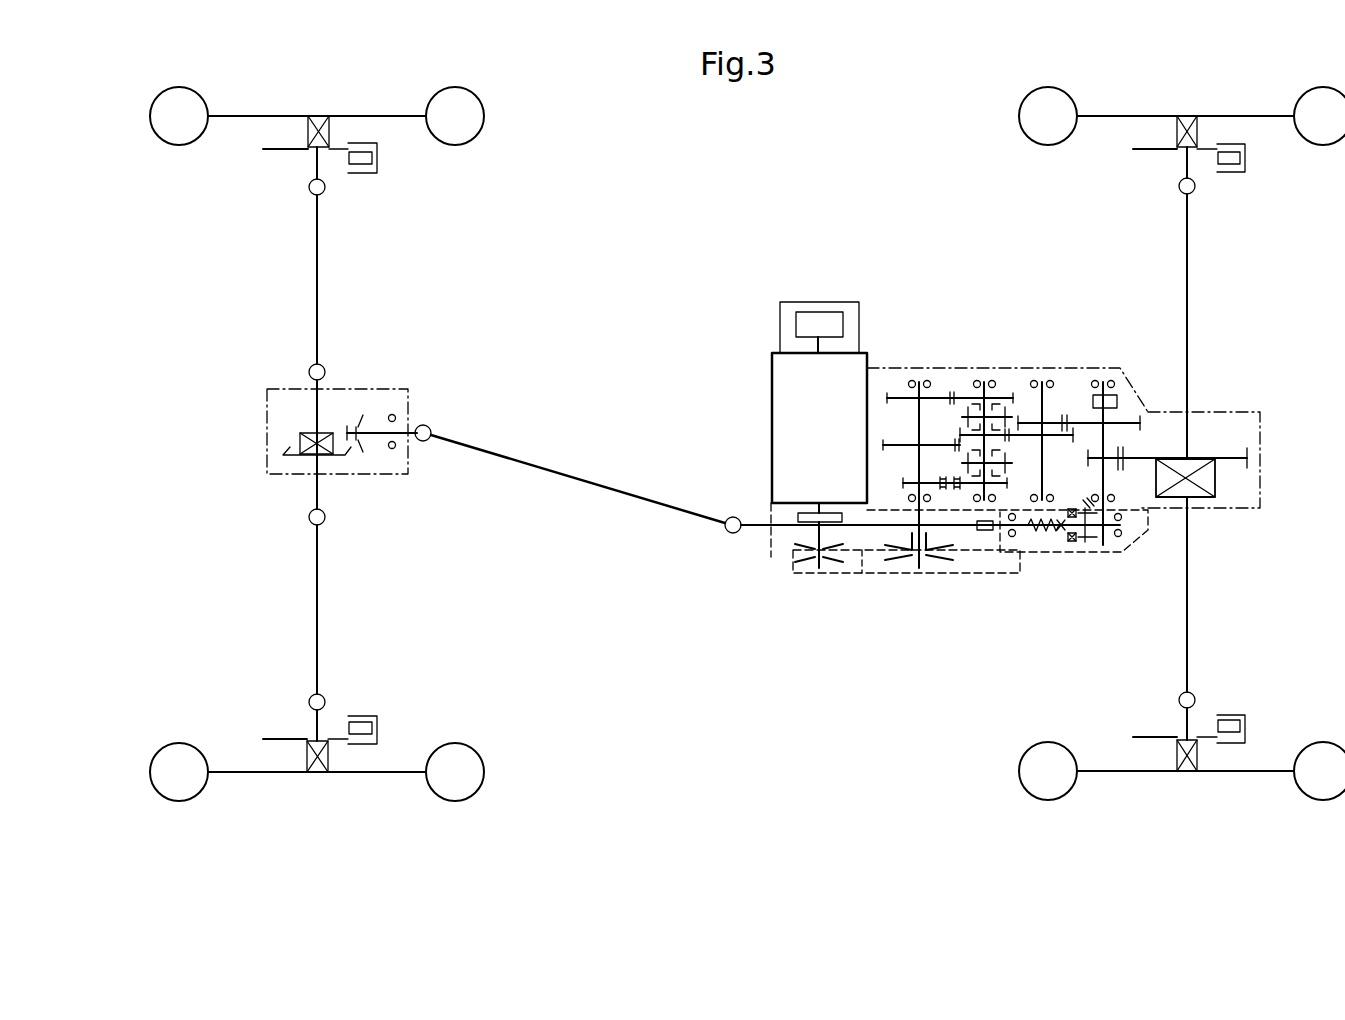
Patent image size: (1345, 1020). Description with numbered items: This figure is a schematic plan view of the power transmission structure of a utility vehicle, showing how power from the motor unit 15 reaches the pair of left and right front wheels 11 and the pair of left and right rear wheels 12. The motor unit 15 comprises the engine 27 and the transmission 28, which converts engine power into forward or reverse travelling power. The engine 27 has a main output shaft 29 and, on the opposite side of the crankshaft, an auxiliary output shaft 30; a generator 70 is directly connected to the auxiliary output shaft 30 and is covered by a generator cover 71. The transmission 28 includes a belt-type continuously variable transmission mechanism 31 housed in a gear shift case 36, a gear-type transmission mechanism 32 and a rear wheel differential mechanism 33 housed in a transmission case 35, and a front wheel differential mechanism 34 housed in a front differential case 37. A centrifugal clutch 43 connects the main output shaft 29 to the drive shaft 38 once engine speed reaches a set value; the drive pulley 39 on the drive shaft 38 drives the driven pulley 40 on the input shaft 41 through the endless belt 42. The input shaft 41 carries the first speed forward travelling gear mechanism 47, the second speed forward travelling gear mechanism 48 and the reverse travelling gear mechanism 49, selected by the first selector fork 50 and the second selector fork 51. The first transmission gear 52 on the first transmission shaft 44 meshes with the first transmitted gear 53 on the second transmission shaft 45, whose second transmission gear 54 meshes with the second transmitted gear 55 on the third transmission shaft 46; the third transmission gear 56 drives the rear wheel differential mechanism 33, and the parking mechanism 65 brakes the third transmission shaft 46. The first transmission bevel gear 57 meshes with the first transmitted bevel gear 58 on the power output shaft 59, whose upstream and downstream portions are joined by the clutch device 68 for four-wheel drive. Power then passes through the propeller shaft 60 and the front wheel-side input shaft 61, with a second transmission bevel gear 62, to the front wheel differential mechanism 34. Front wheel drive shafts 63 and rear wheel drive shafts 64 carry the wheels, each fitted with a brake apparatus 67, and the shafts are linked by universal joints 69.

The front wheels 11 is at (188, 86).
The rear wheels 12 is at (1213, 113).
The motor unit 15 is at (768, 285).
The engine 27 is at (772, 432).
The transmission 28 is at (1022, 322).
The main output shaft 29 is at (817, 512).
The auxiliary output shaft 30 is at (818, 345).
The belt-type continuously variable transmission mechanism 31 is at (800, 563).
The gear-type transmission mechanism 32 is at (1012, 387).
The rear wheel differential mechanism 33 is at (1193, 493).
The front wheel differential mechanism 34 is at (298, 437).
The transmission case 35 is at (1215, 412).
The gear shift case 36 is at (897, 573).
The front differential case 37 is at (392, 389).
The drive shaft 38 is at (818, 530).
The drive pulley 39 is at (833, 560).
The driven pulley 40 is at (942, 558).
The input shaft 41 is at (920, 563).
The endless belt 42 is at (862, 573).
The centrifugal clutch 43 is at (813, 508).
The first transmission shaft 44 is at (987, 387).
The second transmission shaft 45 is at (1047, 397).
The third transmission shaft 46 is at (1107, 415).
The first speed forward travelling gear mechanism 47 is at (880, 398).
The second speed forward travelling gear mechanism 48 is at (878, 445).
The reverse travelling gear mechanism 49 is at (893, 482).
The first selector fork 50 is at (967, 418).
The second selector fork 51 is at (967, 465).
The first transmission gear 52 is at (1007, 437).
The first transmitted gear 53 is at (1050, 437).
The second transmission gear 54 is at (1057, 422).
The second transmitted gear 55 is at (1123, 427).
The third transmission gear 56 is at (1110, 463).
The first transmission bevel gear 57 is at (1118, 505).
The first transmitted bevel gear 58 is at (1087, 540).
The power output shaft 59 is at (955, 528).
The propeller shaft 60 is at (593, 488).
The front wheel-side input shaft 61 is at (377, 436).
The second transmission bevel gear 62 is at (362, 417).
The front wheel drive shafts 63 is at (318, 260).
The rear wheel drive shafts 64 is at (1187, 297).
The parking mechanism 65 is at (1113, 400).
The brake apparatuses 67 is at (382, 158).
The clutch device 68 is at (1068, 542).
The universal joints 69 is at (310, 192).
The generator 70 is at (803, 312).
The generator cover 71 is at (847, 302).